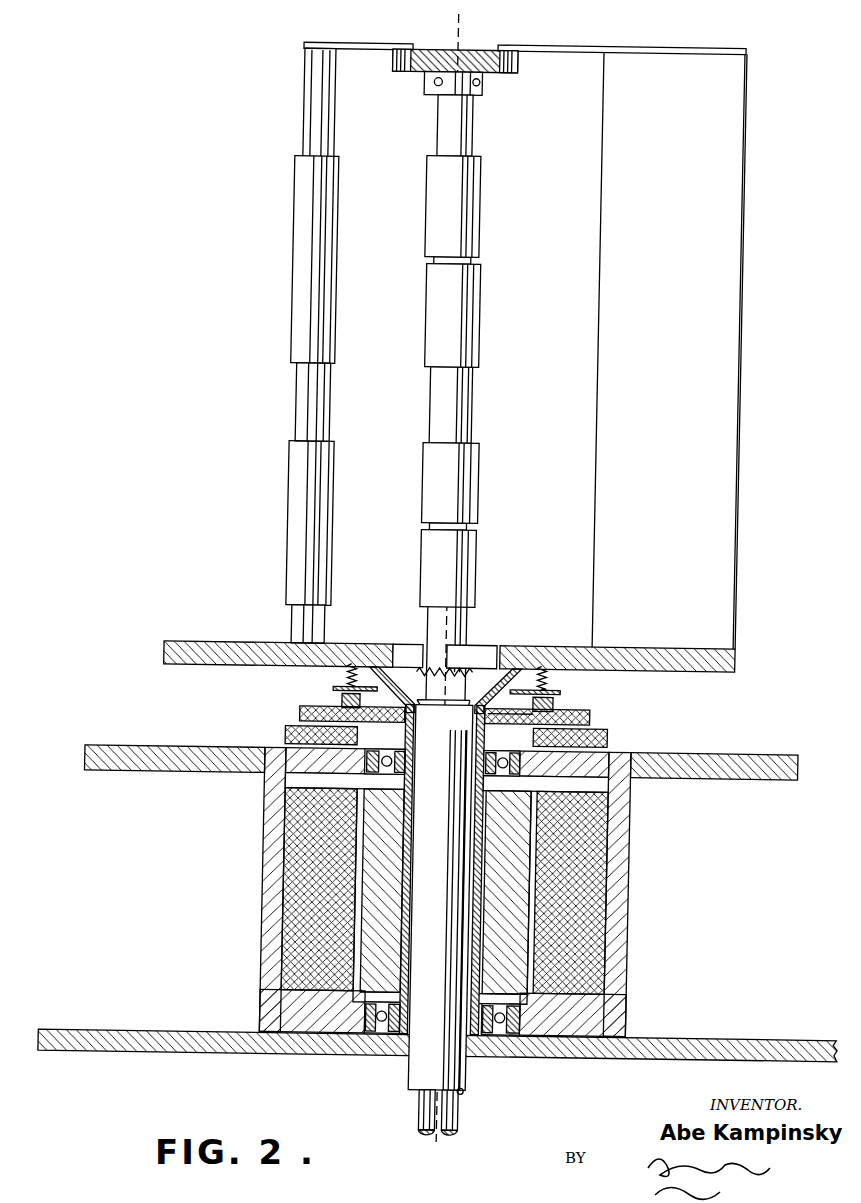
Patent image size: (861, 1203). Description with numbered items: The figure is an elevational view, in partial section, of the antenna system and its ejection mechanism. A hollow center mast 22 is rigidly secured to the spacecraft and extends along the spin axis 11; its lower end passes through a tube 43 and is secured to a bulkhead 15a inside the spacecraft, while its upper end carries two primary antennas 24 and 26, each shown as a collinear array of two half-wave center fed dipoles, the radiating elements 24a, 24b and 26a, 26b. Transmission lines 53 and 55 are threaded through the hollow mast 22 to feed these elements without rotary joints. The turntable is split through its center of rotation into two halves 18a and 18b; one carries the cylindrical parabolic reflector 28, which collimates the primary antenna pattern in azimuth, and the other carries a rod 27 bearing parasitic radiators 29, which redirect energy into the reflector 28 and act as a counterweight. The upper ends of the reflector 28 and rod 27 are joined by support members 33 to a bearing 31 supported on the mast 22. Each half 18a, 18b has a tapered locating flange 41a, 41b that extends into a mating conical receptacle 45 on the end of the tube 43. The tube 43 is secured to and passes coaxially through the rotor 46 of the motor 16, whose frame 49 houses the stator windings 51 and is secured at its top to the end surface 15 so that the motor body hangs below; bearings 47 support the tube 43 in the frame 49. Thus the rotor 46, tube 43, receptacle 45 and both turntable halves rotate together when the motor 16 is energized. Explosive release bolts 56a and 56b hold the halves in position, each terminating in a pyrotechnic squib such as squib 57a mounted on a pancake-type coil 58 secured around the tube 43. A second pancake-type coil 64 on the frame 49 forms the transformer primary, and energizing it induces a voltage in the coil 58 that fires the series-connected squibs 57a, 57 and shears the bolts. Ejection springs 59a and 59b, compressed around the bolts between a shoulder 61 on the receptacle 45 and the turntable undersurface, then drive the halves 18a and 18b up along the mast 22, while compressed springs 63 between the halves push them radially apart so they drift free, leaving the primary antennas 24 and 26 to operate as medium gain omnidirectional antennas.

The spin axis 11 is at (473, 25).
The end surface 15 is at (201, 751).
The bulkhead 15a is at (183, 1035).
The motor 16 is at (399, 899).
The turntable half 18a is at (241, 645).
The turntable half 18b is at (661, 645).
The center mast 22 is at (466, 413).
The primary antenna 24 is at (484, 262).
The radiating element 24a is at (469, 180).
The radiating element 24b is at (469, 316).
The primary antenna 26 is at (482, 526).
The radiating element 26a is at (470, 470).
The radiating element 26b is at (474, 574).
The rod 27 is at (314, 412).
The reflector 28 is at (605, 201).
The parasitic radiators 29 is at (313, 277).
The bearing 31 is at (433, 88).
The support members 33 is at (397, 44).
The tapered locating flange 41a is at (411, 673).
The tapered locating flange 41b is at (504, 680).
The tube 43 is at (417, 781).
The conical receptacle 45 is at (422, 702).
The rotor 46 is at (400, 841).
The bearings 47 is at (516, 757).
The frame 49 is at (284, 788).
The stator windings 51 is at (306, 922).
The transmission line 53 is at (444, 1110).
The transmission line 55 is at (470, 1108).
The explosive release bolt 56a is at (359, 675).
The explosive release bolt 56b is at (559, 671).
The right spacer block 57 is at (562, 704).
The pyrotechnic squib 57a is at (357, 705).
The pancake-type coil 58 is at (602, 714).
The ejection spring 59a is at (347, 692).
The ejection spring 59b is at (565, 682).
The shoulder 61 is at (541, 697).
The springs 63 is at (451, 673).
The pancake-type coil 64 is at (620, 736).